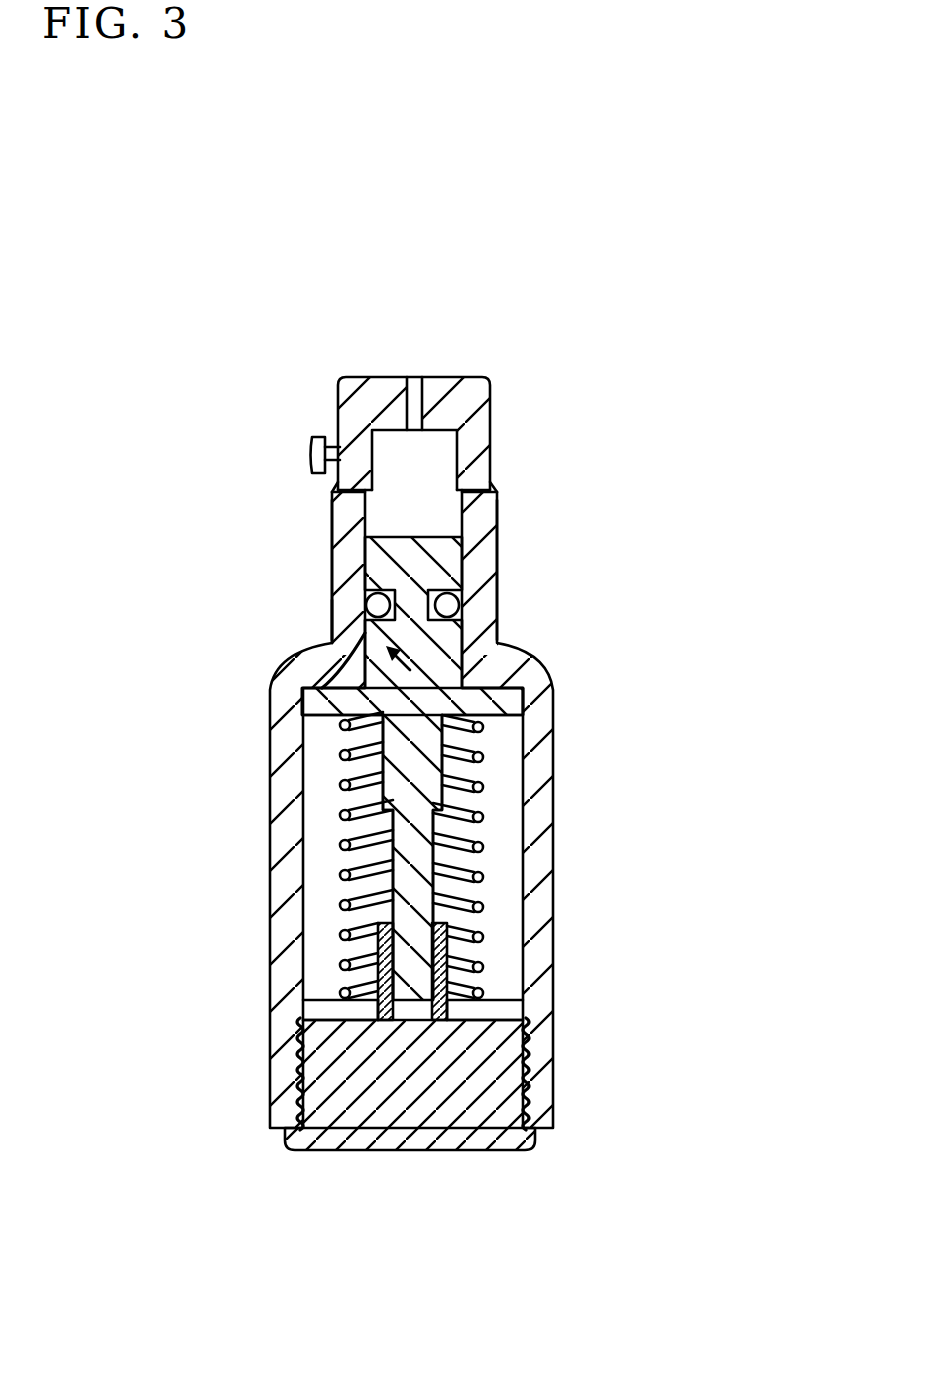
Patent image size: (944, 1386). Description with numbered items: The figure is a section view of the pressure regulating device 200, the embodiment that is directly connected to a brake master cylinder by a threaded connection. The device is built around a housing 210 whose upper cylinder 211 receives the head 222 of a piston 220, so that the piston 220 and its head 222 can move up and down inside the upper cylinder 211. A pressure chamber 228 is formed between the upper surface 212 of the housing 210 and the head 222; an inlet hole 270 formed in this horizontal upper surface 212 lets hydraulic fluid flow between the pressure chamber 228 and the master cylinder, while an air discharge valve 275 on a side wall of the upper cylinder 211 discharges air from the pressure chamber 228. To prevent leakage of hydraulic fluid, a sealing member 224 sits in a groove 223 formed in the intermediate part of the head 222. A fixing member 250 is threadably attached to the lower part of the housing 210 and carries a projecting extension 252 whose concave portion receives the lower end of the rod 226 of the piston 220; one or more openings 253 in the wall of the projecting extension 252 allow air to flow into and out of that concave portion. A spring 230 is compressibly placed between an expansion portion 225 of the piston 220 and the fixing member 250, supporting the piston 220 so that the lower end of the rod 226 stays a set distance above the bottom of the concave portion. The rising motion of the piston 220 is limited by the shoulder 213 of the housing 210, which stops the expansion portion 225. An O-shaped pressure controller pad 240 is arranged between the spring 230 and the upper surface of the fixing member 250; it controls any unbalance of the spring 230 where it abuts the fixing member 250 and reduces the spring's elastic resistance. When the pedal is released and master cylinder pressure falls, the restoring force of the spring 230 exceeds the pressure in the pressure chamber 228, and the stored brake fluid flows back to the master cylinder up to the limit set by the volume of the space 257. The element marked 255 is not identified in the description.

The pressure regulating device 200 is at (432, 325).
The housing 210 is at (512, 569).
The upper cylinder 211 is at (497, 503).
The upper surface 212 is at (490, 383).
The shoulder 213 is at (328, 648).
The piston 220 is at (330, 623).
The head 222 is at (432, 560).
The groove 223 is at (363, 580).
The sealing member 224 is at (452, 607).
The expansion portion 225 is at (320, 700).
The rod 226 is at (398, 826).
The pressure chamber 228 is at (430, 460).
The spring 230 is at (482, 870).
The pressure controller pad 240 is at (510, 1010).
The fixing member 250 is at (404, 1135).
The projecting extension 252 is at (447, 952).
The opening 253 is at (437, 1007).
The washer 255 is at (343, 1018).
The space 257 is at (380, 1007).
The inlet hole 270 is at (408, 380).
The air discharge valve 275 is at (310, 442).